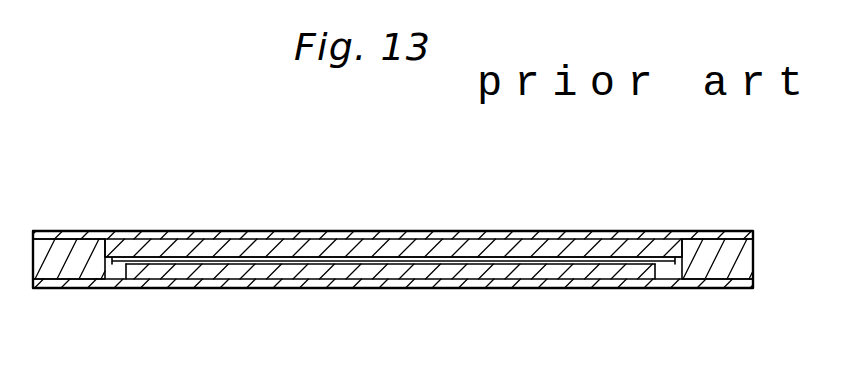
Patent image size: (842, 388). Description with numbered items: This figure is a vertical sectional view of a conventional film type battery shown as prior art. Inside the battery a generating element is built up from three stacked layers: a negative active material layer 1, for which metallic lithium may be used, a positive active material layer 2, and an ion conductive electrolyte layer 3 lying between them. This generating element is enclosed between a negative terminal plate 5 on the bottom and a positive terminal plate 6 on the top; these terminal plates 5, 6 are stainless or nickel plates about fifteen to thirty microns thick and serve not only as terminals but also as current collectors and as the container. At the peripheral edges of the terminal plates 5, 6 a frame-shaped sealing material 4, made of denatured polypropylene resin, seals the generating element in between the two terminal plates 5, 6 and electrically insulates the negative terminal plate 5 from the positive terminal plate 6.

The negative active material layer 1 is at (386, 272).
The positive active material layer 2 is at (457, 250).
The ion conductive electrolyte layer 3 is at (497, 264).
The frame-shaped sealing material 4 is at (722, 270).
The negative terminal plate 5 is at (267, 288).
The positive terminal plate 6 is at (310, 236).